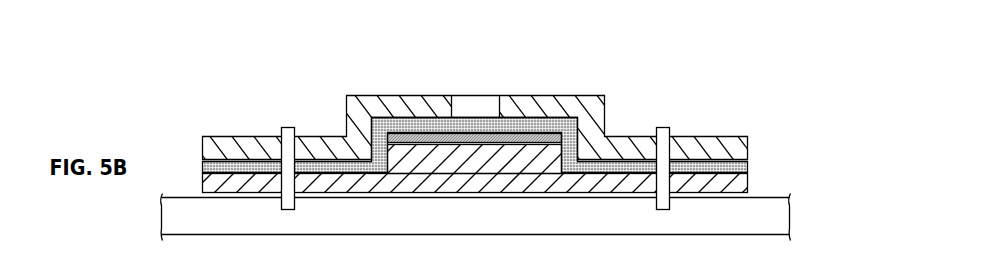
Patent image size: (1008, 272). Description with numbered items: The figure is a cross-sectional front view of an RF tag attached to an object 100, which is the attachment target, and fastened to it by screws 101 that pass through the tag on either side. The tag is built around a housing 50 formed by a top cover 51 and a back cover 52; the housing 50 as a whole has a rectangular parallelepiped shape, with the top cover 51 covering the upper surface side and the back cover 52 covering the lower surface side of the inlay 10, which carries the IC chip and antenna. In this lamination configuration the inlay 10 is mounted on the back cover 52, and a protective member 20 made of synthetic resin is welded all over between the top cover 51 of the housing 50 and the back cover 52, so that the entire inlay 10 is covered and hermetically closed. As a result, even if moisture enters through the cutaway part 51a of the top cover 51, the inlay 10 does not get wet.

The object 100 is at (737, 218).
The screws 101 is at (288, 128).
The inlay 10 is at (553, 138).
The protective member 20 is at (527, 127).
The housing 50 is at (516, 110).
The top cover 51 is at (496, 95).
The cutaway part 51a is at (475, 108).
The back cover 52 is at (737, 185).